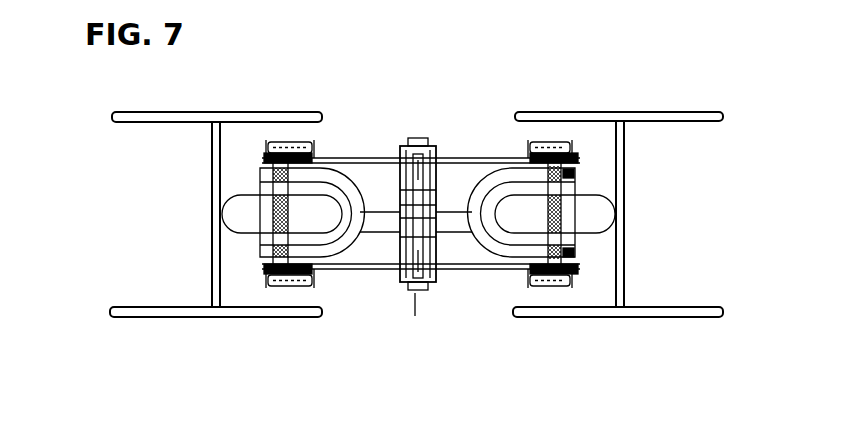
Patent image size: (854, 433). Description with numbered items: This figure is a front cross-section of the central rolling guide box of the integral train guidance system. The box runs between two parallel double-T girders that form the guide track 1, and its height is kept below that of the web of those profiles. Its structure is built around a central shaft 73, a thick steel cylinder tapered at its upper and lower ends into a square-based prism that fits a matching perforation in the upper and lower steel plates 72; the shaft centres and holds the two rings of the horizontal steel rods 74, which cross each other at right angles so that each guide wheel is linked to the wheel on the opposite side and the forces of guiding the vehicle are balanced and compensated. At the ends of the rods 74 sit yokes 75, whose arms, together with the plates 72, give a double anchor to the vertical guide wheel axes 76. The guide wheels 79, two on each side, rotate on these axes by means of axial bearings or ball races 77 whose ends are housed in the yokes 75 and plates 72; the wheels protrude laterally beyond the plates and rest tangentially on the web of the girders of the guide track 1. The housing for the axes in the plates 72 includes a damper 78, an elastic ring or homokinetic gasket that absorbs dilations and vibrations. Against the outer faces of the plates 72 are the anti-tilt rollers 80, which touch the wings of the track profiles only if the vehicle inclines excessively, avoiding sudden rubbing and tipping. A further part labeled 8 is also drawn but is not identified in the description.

The guide track 1 is at (588, 318).
The lower guide bar 8 is at (575, 263).
The steel plate 72 is at (252, 161).
The central shaft 73 is at (432, 140).
The horizontal steel rods 74 is at (463, 223).
The yokes 75 is at (513, 262).
The vertical guide wheel axes 76 is at (566, 184).
The axial bearings or ball races 77 is at (565, 214).
The damper 78 is at (578, 160).
The guide wheels 79 is at (600, 208).
The anti-tilt rollers 80 is at (532, 142).